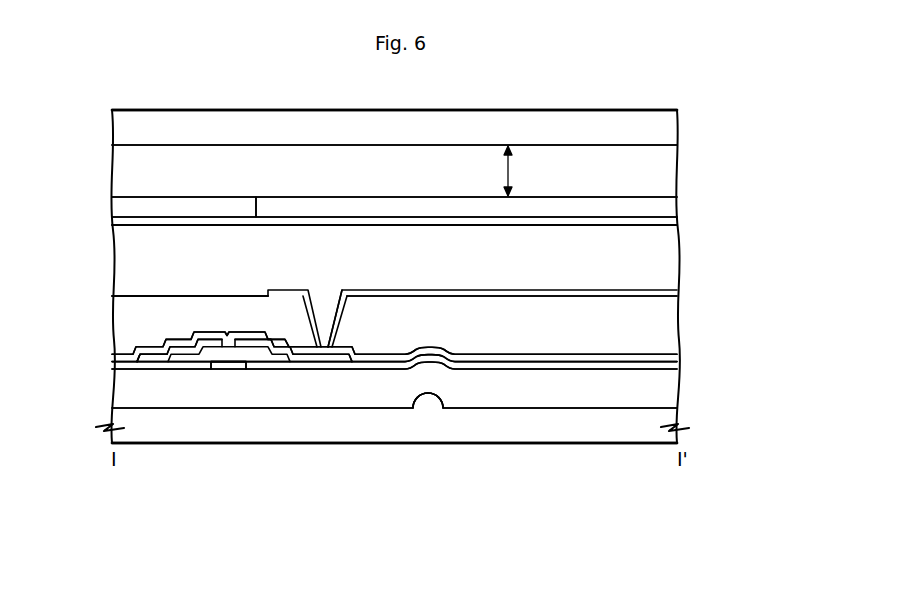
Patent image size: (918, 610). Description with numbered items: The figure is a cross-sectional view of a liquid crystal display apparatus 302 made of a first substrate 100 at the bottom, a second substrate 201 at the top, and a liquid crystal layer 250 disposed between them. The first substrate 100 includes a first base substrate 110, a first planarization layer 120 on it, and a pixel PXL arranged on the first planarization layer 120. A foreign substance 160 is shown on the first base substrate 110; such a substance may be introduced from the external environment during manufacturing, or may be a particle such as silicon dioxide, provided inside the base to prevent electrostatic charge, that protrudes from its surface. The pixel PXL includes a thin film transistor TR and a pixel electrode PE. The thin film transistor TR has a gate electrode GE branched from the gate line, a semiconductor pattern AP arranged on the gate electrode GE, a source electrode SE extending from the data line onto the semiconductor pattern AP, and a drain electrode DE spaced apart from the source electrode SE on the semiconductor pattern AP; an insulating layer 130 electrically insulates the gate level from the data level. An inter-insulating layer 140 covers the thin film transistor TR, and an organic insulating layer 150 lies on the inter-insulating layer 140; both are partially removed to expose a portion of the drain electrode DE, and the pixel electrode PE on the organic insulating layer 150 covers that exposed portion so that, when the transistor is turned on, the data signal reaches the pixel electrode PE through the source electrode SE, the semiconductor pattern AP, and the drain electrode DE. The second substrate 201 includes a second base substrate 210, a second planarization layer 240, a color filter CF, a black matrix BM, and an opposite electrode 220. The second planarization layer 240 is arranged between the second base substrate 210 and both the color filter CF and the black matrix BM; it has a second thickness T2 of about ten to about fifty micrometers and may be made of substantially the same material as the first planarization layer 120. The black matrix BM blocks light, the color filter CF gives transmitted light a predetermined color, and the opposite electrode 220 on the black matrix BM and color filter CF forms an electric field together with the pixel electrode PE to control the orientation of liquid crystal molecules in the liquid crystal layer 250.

The second base substrate 210 is at (668, 132).
The second planarization layer 240 is at (668, 172).
The second thickness T2 is at (522, 171).
The black matrix BM is at (125, 208).
The color filter CF is at (668, 207).
The opposite electrode 220 is at (668, 221).
The second substrate 201 is at (758, 118).
The liquid crystal layer 250 is at (668, 246).
The display apparatus 302 is at (814, 158).
The organic insulating layer 150 is at (668, 310).
The inter-insulating layer 140 is at (668, 357).
The insulating layer 130 is at (668, 363).
The first planarization layer 120 is at (668, 393).
The first base substrate 110 is at (668, 420).
The foreign substance 160 is at (428, 404).
The first substrate 100 is at (760, 295).
The gate electrode GE is at (228, 366).
The semiconductor pattern AP is at (190, 358).
The source electrode SE is at (162, 358).
The drain electrode DE is at (267, 349).
The pixel electrode PE is at (323, 352).
The thin film transistor TR is at (300, 496).
The pixel PXL is at (345, 536).